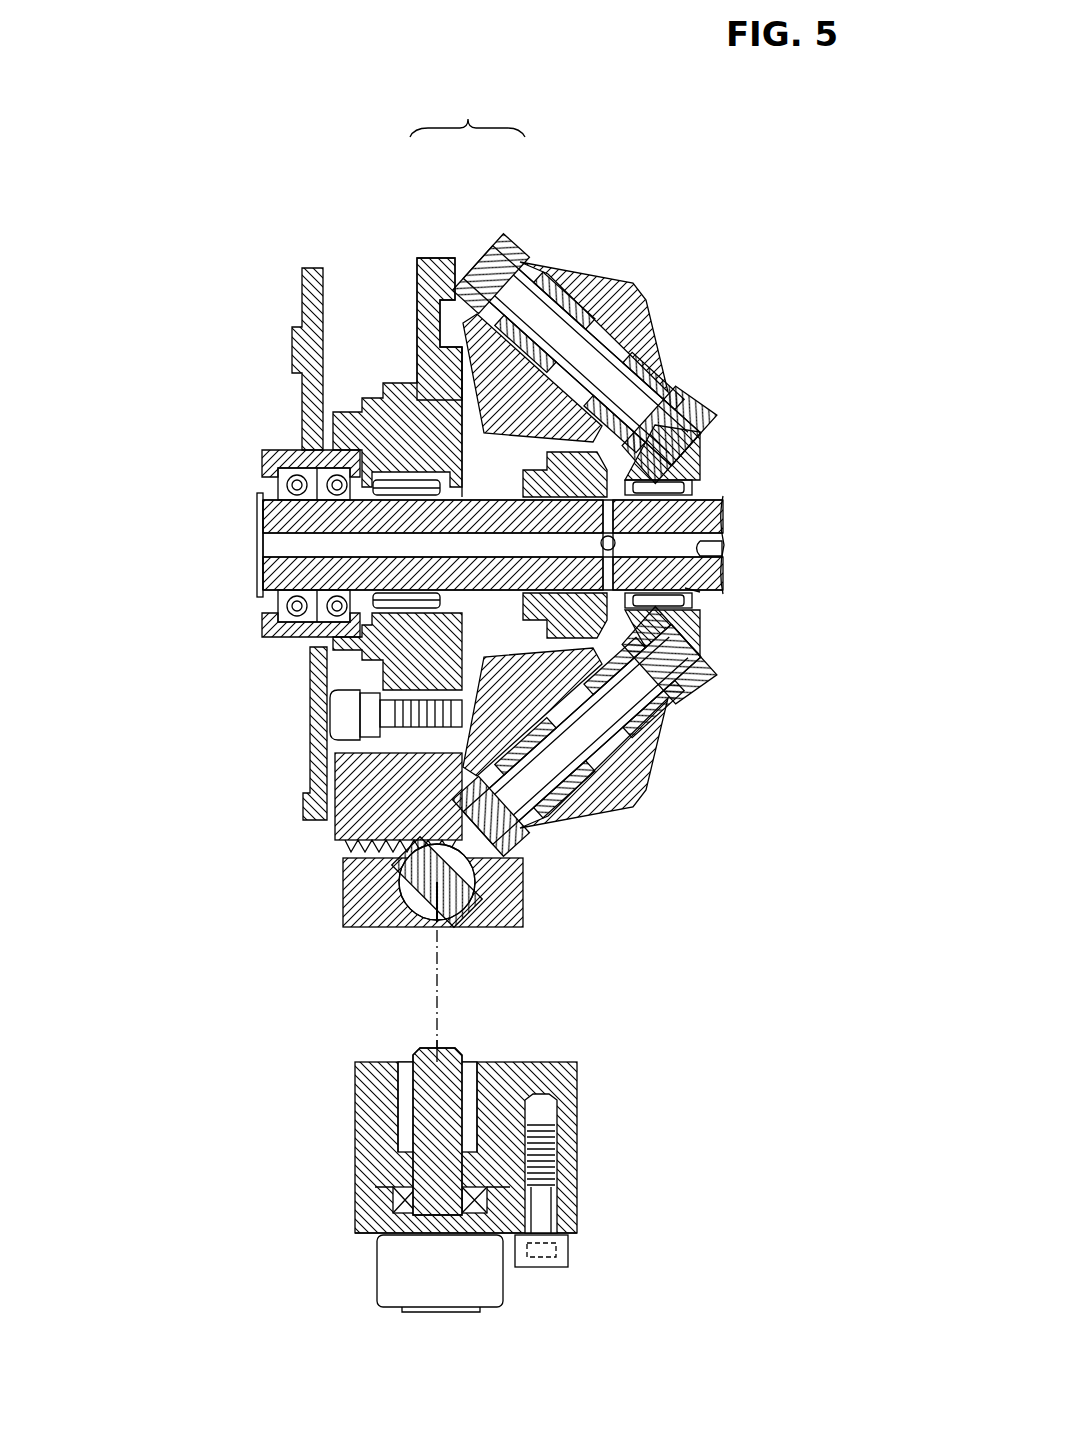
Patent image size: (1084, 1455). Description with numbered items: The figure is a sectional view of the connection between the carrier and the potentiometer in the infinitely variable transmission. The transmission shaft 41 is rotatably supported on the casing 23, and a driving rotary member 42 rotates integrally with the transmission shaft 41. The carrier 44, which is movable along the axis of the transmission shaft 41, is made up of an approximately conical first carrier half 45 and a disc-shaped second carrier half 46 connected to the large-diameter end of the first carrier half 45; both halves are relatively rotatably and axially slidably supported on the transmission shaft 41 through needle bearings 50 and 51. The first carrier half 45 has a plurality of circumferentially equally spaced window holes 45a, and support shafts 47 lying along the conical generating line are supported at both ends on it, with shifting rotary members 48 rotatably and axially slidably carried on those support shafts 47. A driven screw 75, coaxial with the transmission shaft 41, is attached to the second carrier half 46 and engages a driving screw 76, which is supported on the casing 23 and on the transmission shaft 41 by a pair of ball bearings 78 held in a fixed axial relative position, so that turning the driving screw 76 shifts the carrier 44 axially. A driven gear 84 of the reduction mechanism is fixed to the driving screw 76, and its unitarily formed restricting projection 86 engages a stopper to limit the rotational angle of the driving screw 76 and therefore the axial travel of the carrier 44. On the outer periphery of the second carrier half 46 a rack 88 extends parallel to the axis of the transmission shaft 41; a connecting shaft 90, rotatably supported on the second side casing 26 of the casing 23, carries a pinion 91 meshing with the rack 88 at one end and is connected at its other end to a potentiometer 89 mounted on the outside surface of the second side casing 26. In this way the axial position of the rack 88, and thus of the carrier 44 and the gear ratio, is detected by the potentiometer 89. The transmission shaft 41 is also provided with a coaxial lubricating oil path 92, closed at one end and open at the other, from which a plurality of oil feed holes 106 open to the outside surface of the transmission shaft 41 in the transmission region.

The casing 23 is at (577, 1095).
The second side casing 26 is at (566, 1118).
The transmission shaft 41 is at (712, 500).
The driving rotary member 42 is at (656, 686).
The carrier 44 is at (467, 112).
The first carrier half 45 is at (494, 248).
The window holes 45a is at (655, 385).
The second carrier half 46 is at (438, 256).
The support shafts 47 is at (548, 356).
The shifting rotary members 48 is at (588, 290).
The needle bearing 50 is at (680, 440).
The needle bearing 51 is at (462, 455).
The driven screw 75 is at (395, 423).
The driving screw 76 is at (340, 712).
The ball bearings 78 is at (318, 612).
The driven gear 84 is at (312, 810).
The restricting projection 86 is at (298, 345).
The rack 88 is at (360, 852).
The potentiometer 89 is at (424, 1284).
The connecting shaft 90 is at (432, 1107).
The pinion 91 is at (378, 900).
The lubricating oil path 92 is at (724, 547).
The oil feed holes 106 is at (700, 590).